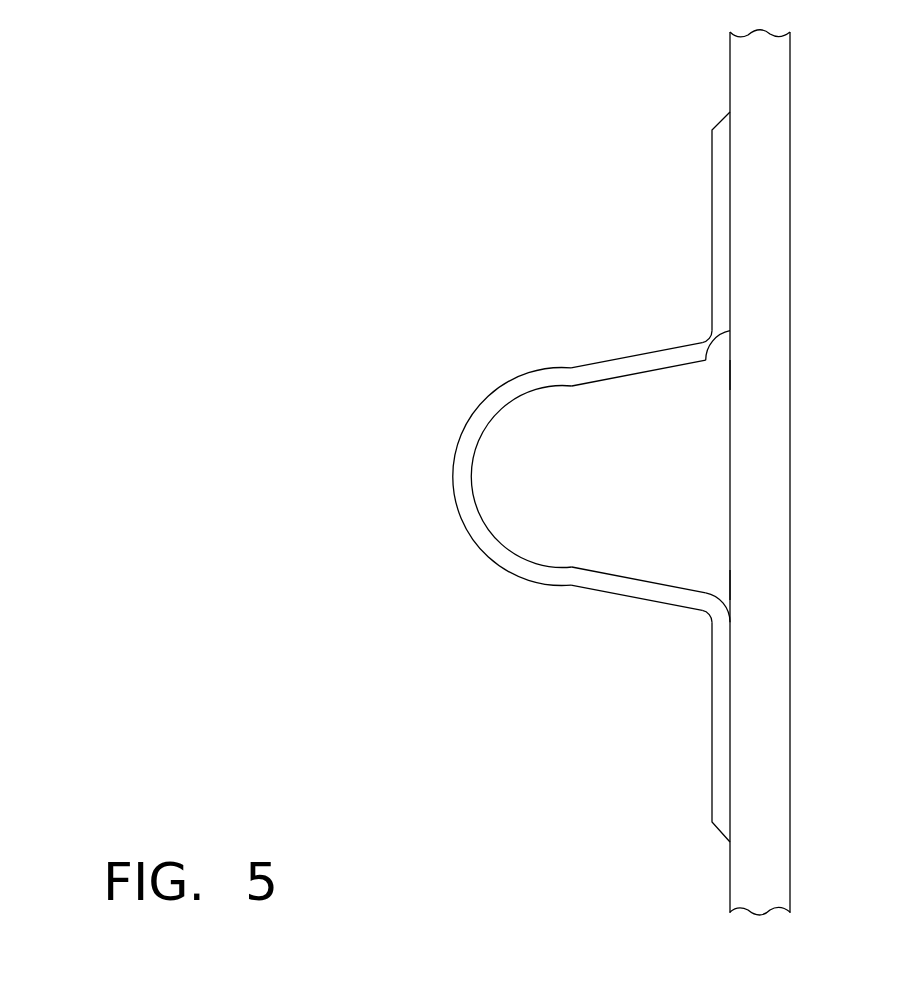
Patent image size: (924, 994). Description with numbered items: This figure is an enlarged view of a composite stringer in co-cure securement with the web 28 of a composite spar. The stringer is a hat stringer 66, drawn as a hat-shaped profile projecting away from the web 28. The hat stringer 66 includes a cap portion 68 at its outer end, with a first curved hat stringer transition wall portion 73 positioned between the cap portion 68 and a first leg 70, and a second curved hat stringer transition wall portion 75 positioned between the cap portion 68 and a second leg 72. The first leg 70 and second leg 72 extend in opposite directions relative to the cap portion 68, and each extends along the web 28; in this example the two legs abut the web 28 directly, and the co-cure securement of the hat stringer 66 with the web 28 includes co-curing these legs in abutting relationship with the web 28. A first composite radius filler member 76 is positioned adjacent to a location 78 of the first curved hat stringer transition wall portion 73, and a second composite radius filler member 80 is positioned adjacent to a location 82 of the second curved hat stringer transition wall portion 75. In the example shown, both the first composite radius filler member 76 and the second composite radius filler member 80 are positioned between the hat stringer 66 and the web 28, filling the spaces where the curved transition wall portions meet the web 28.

The web 28 is at (775, 488).
The hat stringer 66 is at (575, 350).
The cap portion 68 is at (468, 453).
The first leg 70 is at (712, 742).
The second leg 72 is at (712, 212).
The first curved hat stringer transition wall portion 73 is at (698, 616).
The second curved hat stringer transition wall portion 75 is at (700, 331).
The first composite radius filler member 76 is at (725, 583).
The location 78 is at (738, 585).
The second composite radius filler member 80 is at (721, 369).
The location 82 is at (737, 376).